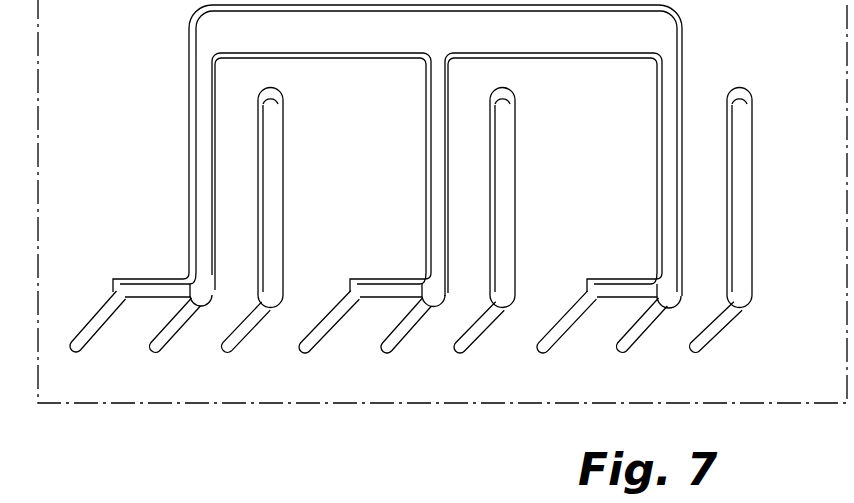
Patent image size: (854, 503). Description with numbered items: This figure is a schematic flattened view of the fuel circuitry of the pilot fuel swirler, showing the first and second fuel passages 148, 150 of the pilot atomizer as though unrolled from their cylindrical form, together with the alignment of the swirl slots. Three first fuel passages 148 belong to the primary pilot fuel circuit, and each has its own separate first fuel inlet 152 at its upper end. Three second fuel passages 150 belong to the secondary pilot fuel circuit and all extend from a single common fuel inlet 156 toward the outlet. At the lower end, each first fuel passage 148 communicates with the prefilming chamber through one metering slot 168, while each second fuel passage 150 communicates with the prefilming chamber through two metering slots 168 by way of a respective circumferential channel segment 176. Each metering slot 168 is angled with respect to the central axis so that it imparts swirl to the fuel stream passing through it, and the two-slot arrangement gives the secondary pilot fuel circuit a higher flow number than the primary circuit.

The first fuel passage 148 is at (272, 207).
The second fuel passage 150 is at (200, 150).
The first fuel inlet 152 is at (268, 99).
The common fuel inlet 156 is at (337, 30).
The metering slot 168 is at (78, 349).
The circumferential channel segment 176 is at (141, 286).